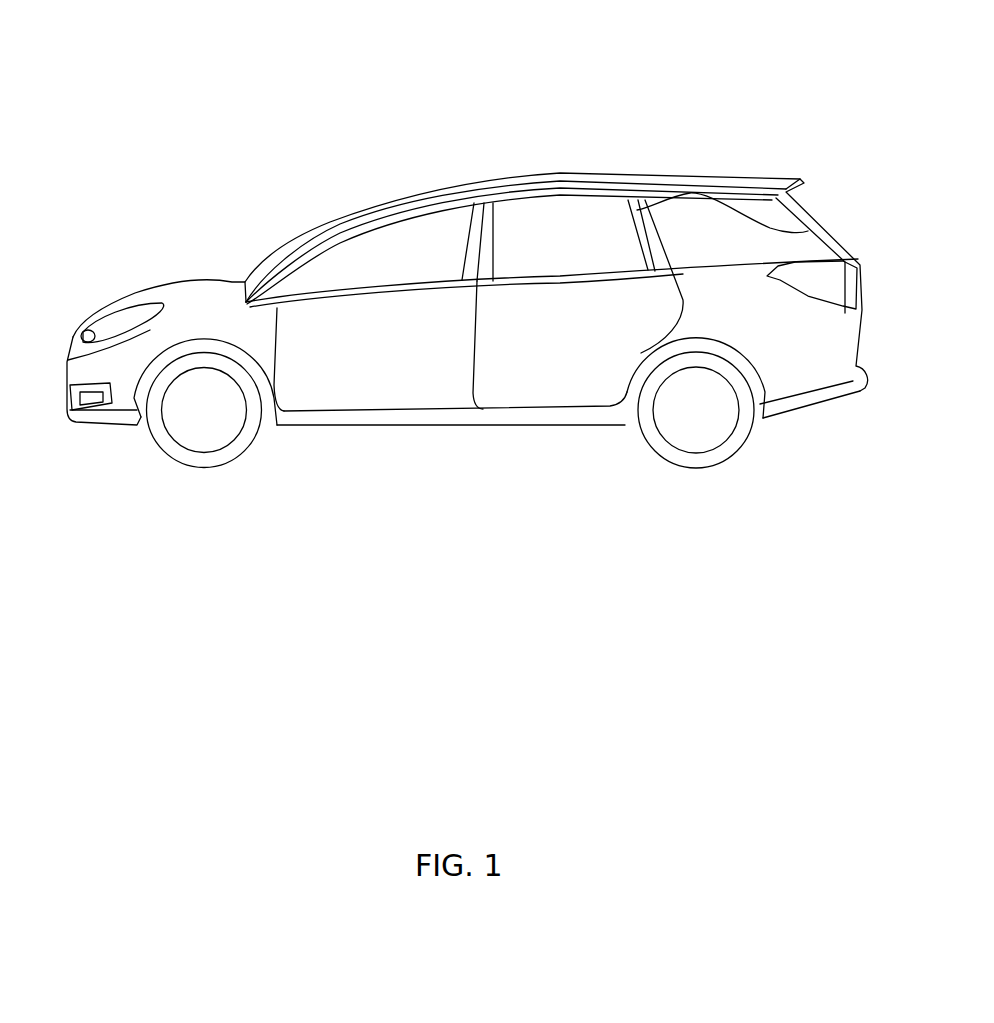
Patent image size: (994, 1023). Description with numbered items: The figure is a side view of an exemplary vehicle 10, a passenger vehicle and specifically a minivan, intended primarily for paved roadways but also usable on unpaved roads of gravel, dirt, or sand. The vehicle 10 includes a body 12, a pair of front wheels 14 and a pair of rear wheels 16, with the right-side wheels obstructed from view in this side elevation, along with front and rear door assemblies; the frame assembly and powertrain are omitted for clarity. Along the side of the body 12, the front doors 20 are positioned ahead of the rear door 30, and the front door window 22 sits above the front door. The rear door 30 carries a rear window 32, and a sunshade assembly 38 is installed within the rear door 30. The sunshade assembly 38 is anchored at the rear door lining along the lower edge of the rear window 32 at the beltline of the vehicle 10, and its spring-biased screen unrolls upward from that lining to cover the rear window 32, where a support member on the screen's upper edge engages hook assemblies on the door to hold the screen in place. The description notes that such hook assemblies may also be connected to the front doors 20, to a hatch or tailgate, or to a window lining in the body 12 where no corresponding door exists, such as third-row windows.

The vehicle 10 is at (516, 106).
The body 12 is at (330, 428).
The front wheels 14 is at (192, 468).
The rear wheels 16 is at (688, 468).
The front doors 20 is at (410, 372).
The front door window 22 is at (438, 237).
The rear door 30 is at (562, 372).
The rear window 32 is at (643, 213).
The sunshade assembly 38 is at (543, 225).